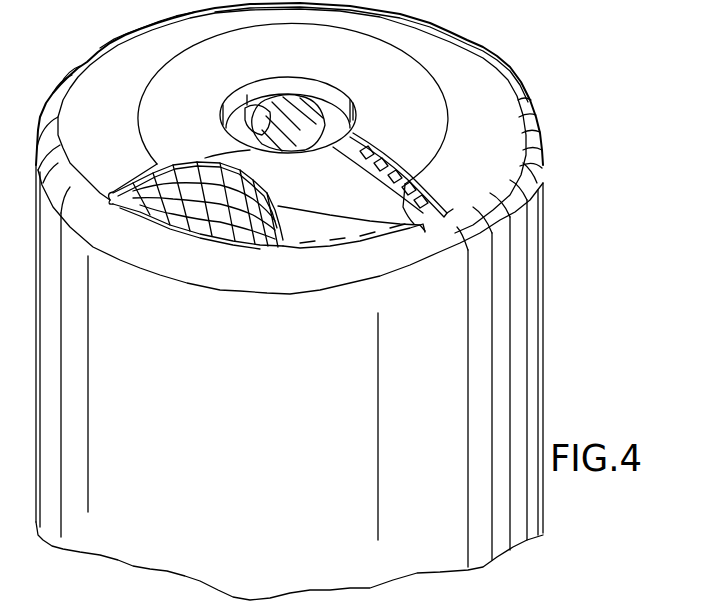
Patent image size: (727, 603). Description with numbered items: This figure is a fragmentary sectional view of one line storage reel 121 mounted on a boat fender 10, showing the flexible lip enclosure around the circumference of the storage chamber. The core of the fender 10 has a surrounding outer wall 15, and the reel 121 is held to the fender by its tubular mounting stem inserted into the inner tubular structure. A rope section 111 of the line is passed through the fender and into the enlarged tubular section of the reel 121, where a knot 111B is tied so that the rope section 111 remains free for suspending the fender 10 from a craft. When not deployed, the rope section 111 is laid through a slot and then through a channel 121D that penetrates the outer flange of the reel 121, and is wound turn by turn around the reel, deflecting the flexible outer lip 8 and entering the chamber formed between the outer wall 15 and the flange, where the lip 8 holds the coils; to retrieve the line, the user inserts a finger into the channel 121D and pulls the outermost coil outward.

The flexible outer lip 8 is at (520, 158).
The boat fender 10 is at (543, 296).
The outer wall 15 is at (547, 361).
The line storage reel 121 is at (467, 83).
The channel 121D is at (428, 178).
The rope section 111 is at (350, 125).
The knot 111B is at (297, 100).